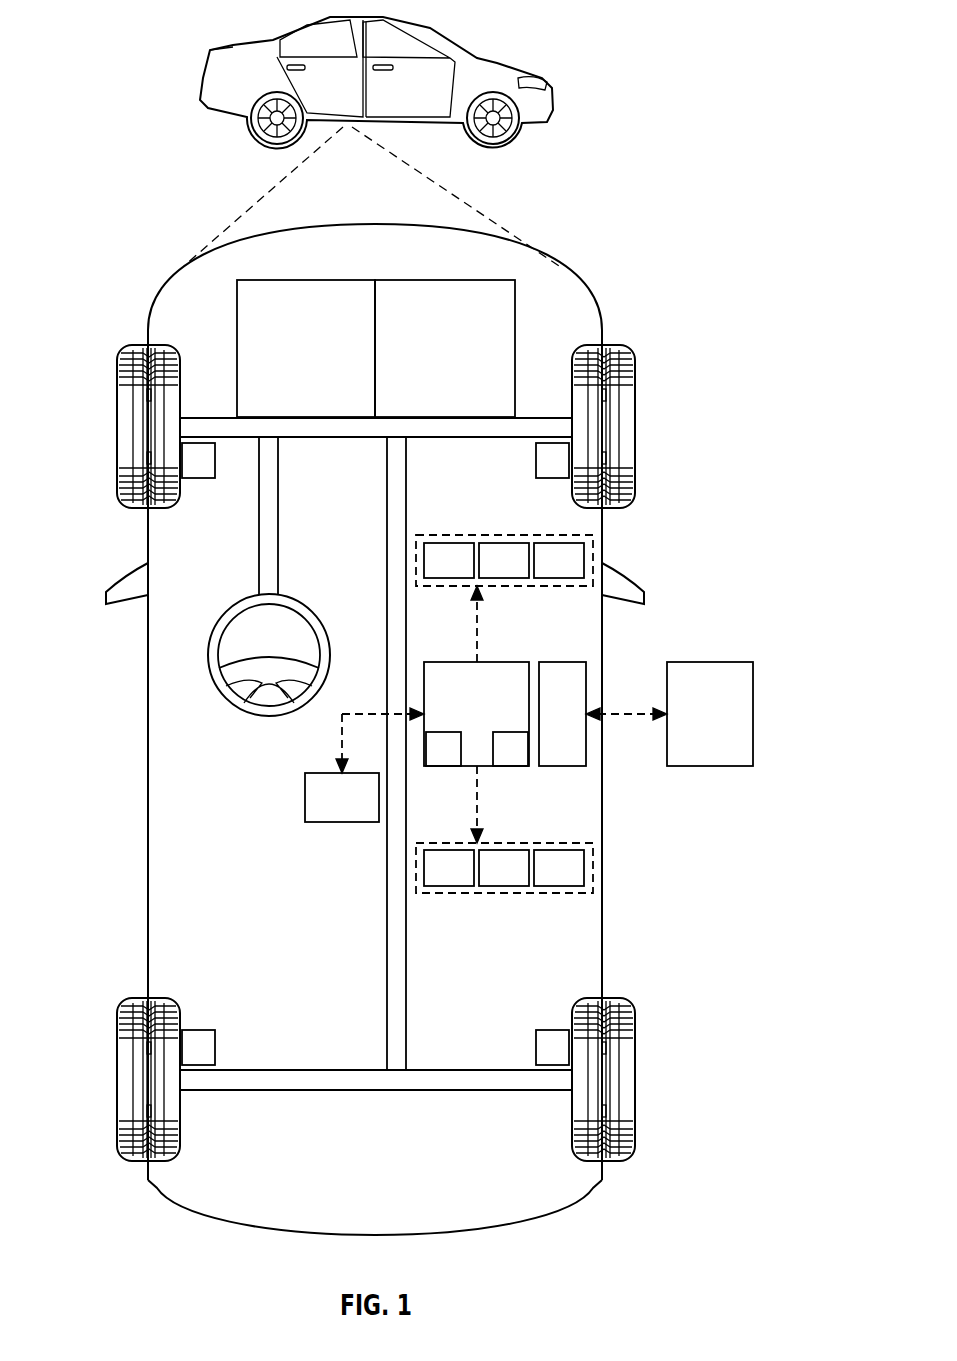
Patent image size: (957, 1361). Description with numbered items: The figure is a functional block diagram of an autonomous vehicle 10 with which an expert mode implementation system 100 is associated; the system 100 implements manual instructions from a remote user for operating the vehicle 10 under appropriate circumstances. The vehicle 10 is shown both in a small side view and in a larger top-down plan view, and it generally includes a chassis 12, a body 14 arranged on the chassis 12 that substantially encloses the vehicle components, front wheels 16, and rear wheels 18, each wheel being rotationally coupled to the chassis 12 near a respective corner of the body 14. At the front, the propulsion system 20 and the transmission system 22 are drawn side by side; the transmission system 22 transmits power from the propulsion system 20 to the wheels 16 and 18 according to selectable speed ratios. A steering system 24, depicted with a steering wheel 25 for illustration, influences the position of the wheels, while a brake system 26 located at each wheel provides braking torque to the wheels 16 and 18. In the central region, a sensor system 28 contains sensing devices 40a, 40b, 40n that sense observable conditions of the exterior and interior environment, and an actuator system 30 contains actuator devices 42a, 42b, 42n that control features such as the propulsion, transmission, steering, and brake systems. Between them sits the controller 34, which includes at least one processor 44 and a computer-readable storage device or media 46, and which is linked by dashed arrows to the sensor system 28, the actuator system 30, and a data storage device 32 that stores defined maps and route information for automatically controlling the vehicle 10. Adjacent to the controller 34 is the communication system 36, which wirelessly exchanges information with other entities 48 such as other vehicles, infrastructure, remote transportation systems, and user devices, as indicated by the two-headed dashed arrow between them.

The expert mode implementation system 100 is at (693, 58).
The vehicle 10 is at (205, 64).
The chassis 12 is at (478, 1092).
The body 14 is at (148, 808).
The front wheels 16 is at (116, 428).
The rear wheels 18 is at (116, 1080).
The propulsion system 20 is at (292, 363).
The transmission system 22 is at (431, 363).
The steering system 24 is at (295, 470).
The steering wheel 25 is at (269, 717).
The brake system 26 is at (186, 474).
The sensor system 28 is at (461, 534).
The actuator system 30 is at (462, 895).
The data storage device 32 is at (328, 811).
The controller 34 is at (463, 727).
The communication system 36 is at (548, 727).
The sensing device 40a is at (429, 574).
The sensing device 40b is at (484, 574).
The sensing device 40n is at (539, 574).
The actuator device 42a is at (429, 881).
The actuator device 42b is at (484, 881).
The actuator device 42n is at (539, 881).
The processor 44 is at (431, 763).
The computer-readable storage device or media 46 is at (498, 763).
The other entities 48 is at (696, 727).